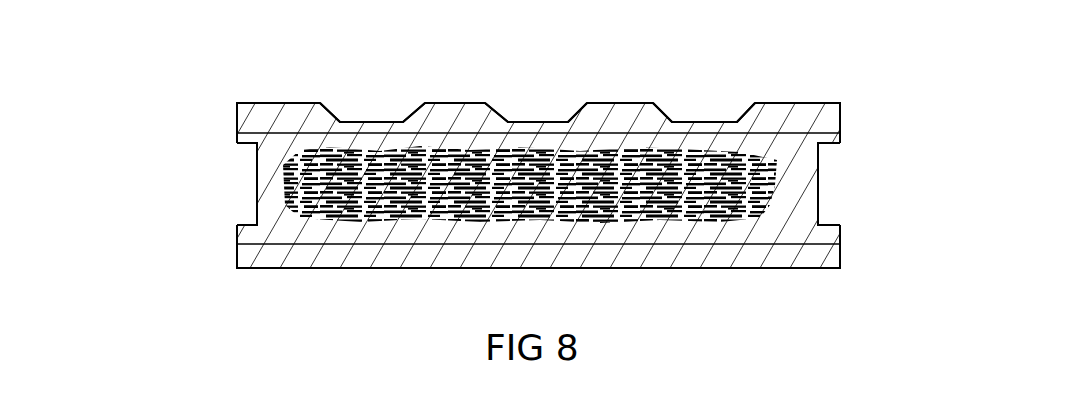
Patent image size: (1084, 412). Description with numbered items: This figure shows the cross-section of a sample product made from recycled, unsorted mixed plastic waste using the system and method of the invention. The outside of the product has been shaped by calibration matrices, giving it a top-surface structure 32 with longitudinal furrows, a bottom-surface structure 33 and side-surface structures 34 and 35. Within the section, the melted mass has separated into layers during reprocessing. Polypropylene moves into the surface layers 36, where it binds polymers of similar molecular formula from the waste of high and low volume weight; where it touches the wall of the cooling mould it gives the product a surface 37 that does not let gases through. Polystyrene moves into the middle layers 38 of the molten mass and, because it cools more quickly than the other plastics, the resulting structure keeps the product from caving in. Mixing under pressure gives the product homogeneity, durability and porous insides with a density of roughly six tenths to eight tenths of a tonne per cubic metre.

The top-surface structure 32 is at (475, 109).
The bottom-surface structure 33 is at (393, 268).
The side-surface structure 34 is at (257, 215).
The side-surface structure 35 is at (818, 200).
The surface layers 36 is at (277, 149).
The surface 37 is at (280, 110).
The middle layers 38 is at (257, 192).